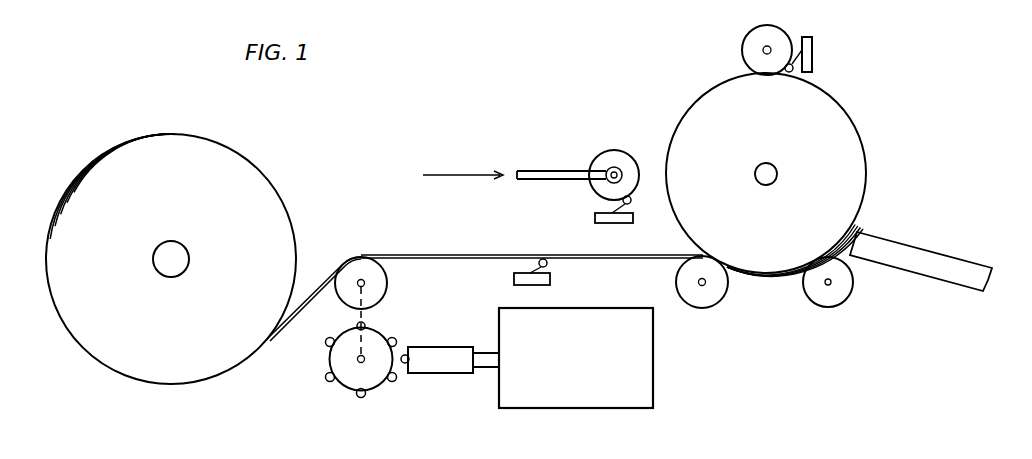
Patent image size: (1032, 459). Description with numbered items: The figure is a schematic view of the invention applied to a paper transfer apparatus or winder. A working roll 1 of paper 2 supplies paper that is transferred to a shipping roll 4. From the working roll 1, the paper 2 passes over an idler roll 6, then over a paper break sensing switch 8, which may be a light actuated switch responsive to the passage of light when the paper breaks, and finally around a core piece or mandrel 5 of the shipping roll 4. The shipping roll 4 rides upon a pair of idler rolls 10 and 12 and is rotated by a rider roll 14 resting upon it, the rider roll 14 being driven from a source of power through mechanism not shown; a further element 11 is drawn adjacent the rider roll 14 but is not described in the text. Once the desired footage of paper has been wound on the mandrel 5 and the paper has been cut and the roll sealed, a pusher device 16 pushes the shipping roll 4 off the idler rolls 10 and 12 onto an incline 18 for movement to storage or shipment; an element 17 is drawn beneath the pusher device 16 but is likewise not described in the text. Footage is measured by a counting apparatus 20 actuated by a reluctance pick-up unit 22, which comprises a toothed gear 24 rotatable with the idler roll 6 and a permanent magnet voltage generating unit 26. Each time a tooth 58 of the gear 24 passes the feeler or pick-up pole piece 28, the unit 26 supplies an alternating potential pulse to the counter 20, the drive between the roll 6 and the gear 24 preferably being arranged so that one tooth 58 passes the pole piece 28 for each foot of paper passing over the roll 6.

The working roll 1 is at (243, 156).
The paper 2 is at (333, 278).
The shipping roll 4 is at (866, 162).
The core piece or mandrel 5 is at (777, 175).
The idler roll 6 is at (388, 281).
The paper break sensing switch 8 is at (550, 281).
The idler roll 10 is at (676, 281).
The stripper element 11 is at (813, 51).
The idler roll 12 is at (805, 292).
The rider roll 14 is at (744, 42).
The pusher device 16 is at (606, 154).
The sensing device 17 is at (594, 218).
The incline 18 is at (918, 246).
The counting apparatus 20 is at (653, 370).
The reluctance pick-up unit 22 is at (449, 360).
The toothed gear 24 is at (378, 336).
The permanent magnet voltage generating unit 26 is at (444, 350).
The pick-up pole piece 28 is at (405, 364).
The tooth 58 is at (326, 378).